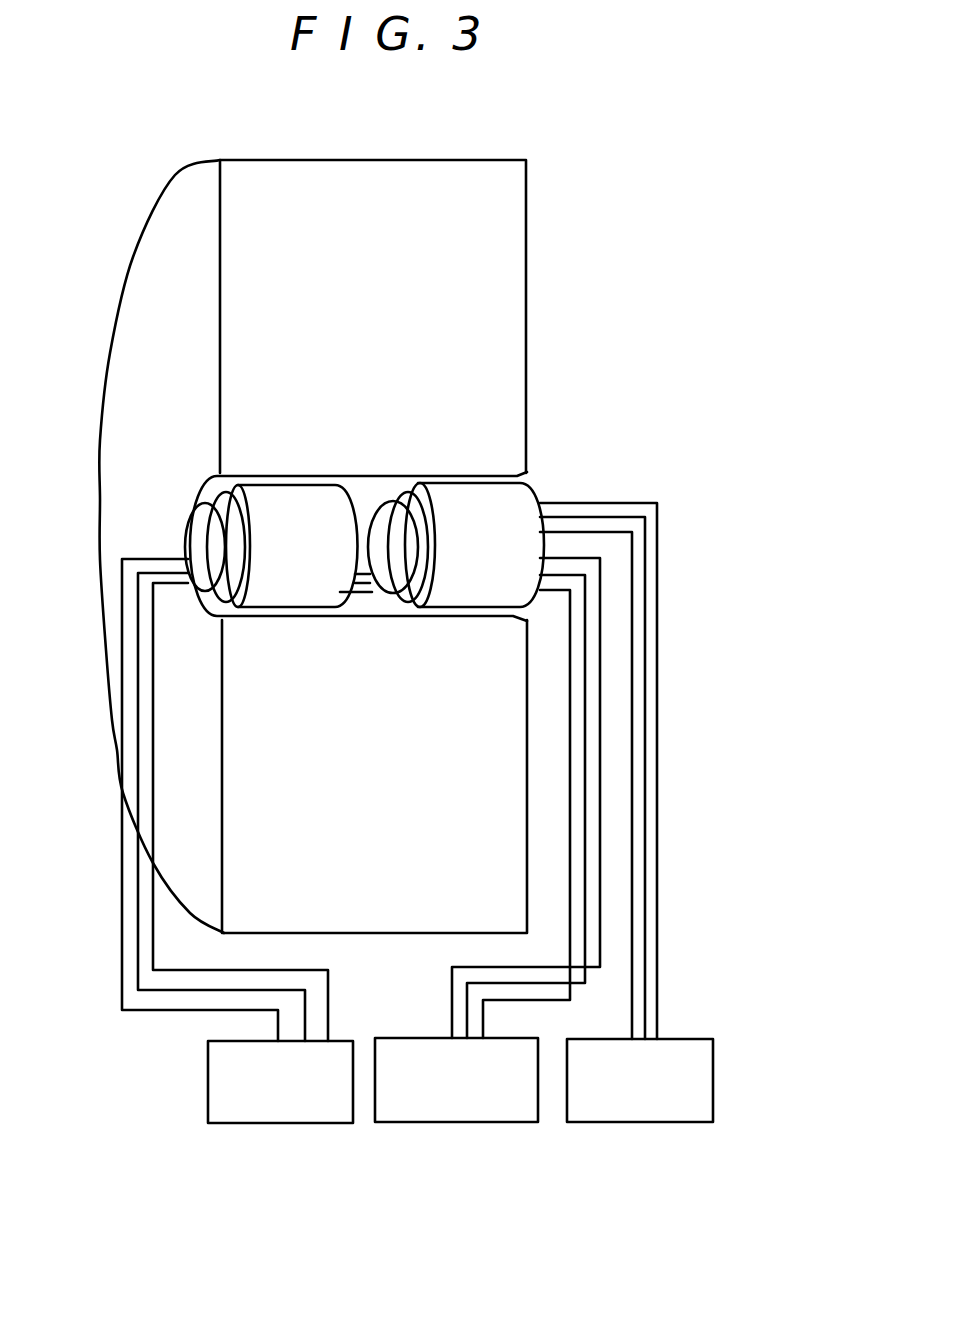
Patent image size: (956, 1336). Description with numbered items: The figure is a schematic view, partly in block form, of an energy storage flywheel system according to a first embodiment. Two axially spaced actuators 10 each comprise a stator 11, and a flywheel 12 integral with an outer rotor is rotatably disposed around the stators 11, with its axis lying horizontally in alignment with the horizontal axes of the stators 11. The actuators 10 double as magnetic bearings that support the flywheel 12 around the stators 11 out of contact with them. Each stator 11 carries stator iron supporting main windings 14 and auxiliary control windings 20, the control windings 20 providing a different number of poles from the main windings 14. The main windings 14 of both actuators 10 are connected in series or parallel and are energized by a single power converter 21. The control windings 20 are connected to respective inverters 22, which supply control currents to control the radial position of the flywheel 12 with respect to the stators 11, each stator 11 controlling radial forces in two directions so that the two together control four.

The actuator 10 is at (278, 440).
The stator 11 is at (203, 528).
The flywheel 12 is at (513, 193).
The main winding 14 is at (600, 627).
The auxiliary control winding 20 is at (150, 558).
The power converter 21 is at (510, 1125).
The inverter 22 is at (208, 1103).